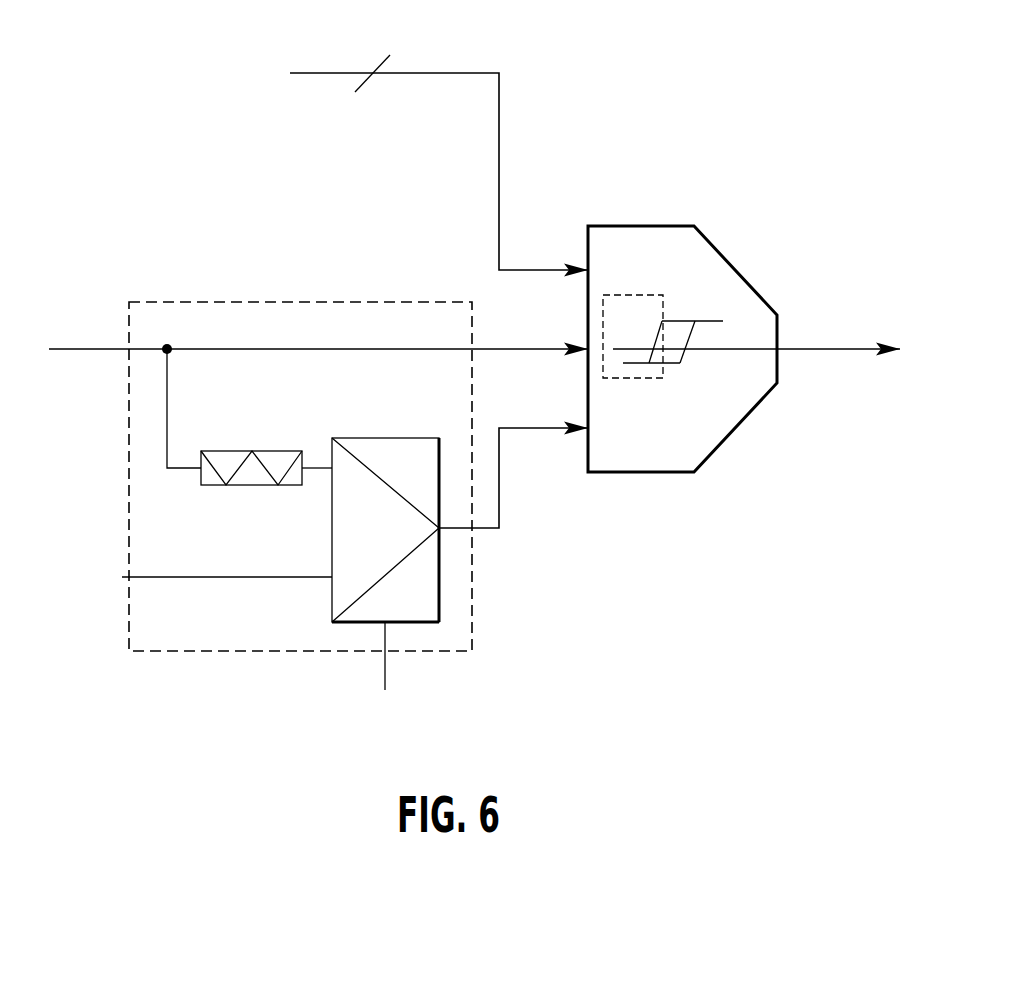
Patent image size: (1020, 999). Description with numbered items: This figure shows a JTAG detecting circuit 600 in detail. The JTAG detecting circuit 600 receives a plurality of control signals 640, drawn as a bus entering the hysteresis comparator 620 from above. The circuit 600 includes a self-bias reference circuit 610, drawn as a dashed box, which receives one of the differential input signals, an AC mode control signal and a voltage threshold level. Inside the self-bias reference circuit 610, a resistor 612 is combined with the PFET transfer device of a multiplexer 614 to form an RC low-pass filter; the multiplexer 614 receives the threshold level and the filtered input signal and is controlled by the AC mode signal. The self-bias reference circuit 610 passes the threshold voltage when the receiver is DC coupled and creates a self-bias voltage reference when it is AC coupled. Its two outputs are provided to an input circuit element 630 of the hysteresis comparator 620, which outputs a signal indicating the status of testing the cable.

The JTAG detecting circuit 600 is at (138, 210).
The self-bias reference circuit 610 is at (300, 301).
The resistor 612 is at (222, 487).
The multiplexer 614 is at (388, 437).
The hysteresis comparator 620 is at (643, 236).
The input circuit element 630 is at (647, 370).
The control signals 640 is at (441, 72).